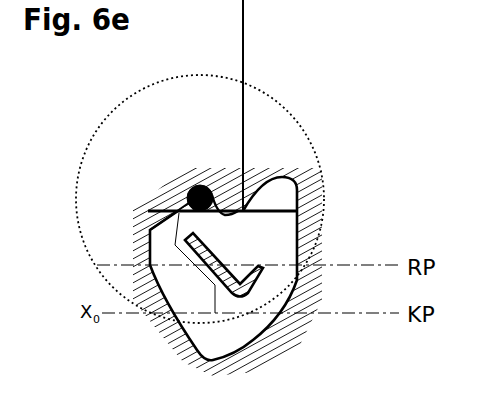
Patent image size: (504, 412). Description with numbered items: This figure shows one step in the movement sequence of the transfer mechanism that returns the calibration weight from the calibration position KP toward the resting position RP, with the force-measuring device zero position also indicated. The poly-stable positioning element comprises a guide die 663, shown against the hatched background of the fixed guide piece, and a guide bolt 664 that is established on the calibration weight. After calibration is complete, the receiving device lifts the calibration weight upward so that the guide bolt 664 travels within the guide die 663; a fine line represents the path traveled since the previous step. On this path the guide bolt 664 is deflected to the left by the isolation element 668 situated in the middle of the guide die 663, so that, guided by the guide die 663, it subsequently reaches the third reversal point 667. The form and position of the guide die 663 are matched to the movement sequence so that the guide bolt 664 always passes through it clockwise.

The guide die 663 is at (222, 340).
The guide bolt 664 is at (203, 185).
The third reversal point 667 is at (185, 168).
The isolation element 668 is at (232, 262).